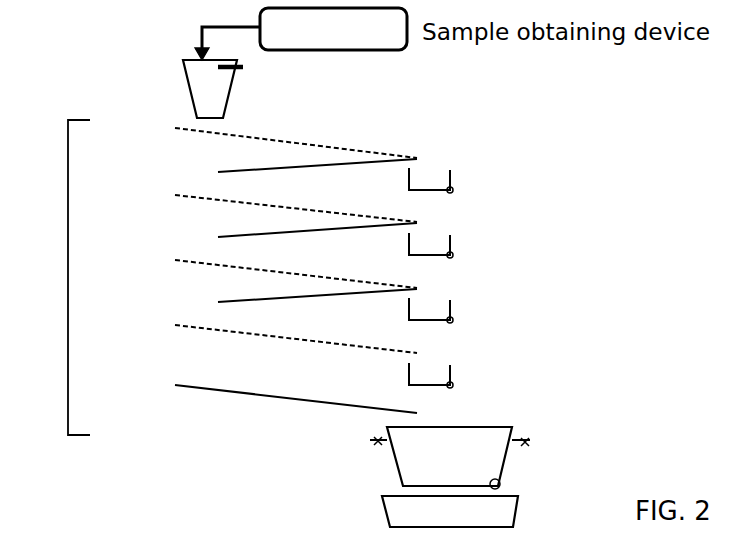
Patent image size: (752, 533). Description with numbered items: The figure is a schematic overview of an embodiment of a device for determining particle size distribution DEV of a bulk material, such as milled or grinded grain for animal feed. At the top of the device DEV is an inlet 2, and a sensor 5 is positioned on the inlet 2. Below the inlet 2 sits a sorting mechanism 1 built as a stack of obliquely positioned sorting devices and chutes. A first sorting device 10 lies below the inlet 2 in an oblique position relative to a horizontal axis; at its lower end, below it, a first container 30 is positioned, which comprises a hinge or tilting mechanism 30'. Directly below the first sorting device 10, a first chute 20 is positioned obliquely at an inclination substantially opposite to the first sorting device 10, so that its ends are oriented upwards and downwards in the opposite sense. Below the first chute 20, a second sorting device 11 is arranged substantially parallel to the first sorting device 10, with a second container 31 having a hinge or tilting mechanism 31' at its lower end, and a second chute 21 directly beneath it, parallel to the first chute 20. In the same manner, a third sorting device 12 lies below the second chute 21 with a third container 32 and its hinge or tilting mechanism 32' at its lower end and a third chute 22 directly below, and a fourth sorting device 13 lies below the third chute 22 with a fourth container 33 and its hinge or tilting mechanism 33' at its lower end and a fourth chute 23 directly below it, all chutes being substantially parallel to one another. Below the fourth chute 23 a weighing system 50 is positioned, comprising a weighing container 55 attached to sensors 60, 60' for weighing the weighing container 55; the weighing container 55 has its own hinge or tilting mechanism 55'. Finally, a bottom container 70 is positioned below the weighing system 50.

The device for determining particle size distribution DEV is at (598, 110).
The sorting mechanism 1 is at (68, 278).
The inlet 2 is at (196, 70).
The sensor 5 is at (237, 68).
The first sorting device 10 is at (176, 128).
The second sorting device 11 is at (176, 195).
The third sorting device 12 is at (176, 260).
The fourth sorting device 13 is at (178, 325).
The first chute 20 is at (361, 166).
The second chute 21 is at (370, 231).
The third chute 22 is at (375, 296).
The fourth chute 23 is at (178, 385).
The first container 30 is at (471, 162).
The hinge or tilting mechanism 30' is at (495, 177).
The second container 31 is at (471, 227).
The hinge or tilting mechanism 31' is at (495, 242).
The third container 32 is at (471, 292).
The hinge or tilting mechanism 32' is at (495, 307).
The fourth container 33 is at (471, 357).
The hinge or tilting mechanism 33' is at (495, 372).
The weighing system 50 is at (370, 478).
The weighing container 55 is at (564, 399).
The hinge or tilting mechanism 55' is at (540, 466).
The sensor 60 is at (563, 428).
The sensor 60' is at (338, 460).
The bottom container 70 is at (512, 514).